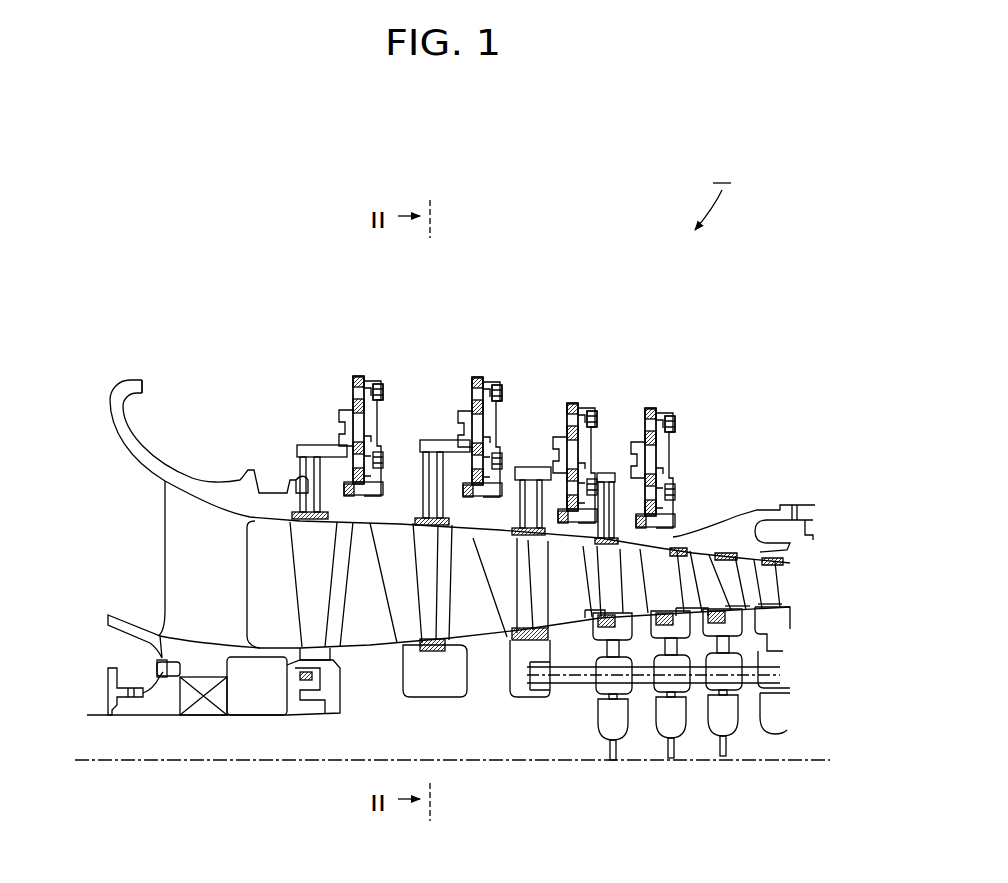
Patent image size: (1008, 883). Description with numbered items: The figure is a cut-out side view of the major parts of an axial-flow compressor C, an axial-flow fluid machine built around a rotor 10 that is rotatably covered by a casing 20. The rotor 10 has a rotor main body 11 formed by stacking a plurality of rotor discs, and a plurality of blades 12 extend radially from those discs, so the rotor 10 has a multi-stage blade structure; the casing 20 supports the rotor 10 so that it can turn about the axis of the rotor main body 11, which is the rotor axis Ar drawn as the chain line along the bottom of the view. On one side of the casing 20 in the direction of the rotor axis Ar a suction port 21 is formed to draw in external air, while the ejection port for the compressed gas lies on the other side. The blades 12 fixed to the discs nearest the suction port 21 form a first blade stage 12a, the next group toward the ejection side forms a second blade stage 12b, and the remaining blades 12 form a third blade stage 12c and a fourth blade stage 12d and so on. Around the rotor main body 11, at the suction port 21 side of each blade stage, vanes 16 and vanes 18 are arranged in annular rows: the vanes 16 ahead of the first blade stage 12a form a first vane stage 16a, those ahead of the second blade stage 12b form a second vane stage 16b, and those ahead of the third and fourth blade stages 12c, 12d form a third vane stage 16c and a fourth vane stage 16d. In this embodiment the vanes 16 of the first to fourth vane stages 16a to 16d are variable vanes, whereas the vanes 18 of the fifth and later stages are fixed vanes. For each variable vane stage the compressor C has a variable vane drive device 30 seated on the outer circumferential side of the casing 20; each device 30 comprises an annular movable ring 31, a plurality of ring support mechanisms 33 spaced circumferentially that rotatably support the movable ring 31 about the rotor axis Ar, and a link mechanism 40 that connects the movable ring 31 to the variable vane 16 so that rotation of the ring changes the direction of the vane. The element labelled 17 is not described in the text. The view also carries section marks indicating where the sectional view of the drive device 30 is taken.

The rotor 10 is at (166, 703).
The rotor main body 11 is at (753, 715).
The blades 12 is at (471, 464).
The first blade stage 12a is at (363, 590).
The second blade stage 12b is at (523, 560).
The third blade stage 12c is at (600, 570).
The fourth blade stage 12d is at (643, 593).
The vanes 16 is at (475, 448).
The first vane stage 16a is at (303, 558).
The second vane stage 16b is at (427, 560).
The third vane stage 16c is at (483, 552).
The fourth vane stage 16d is at (640, 574).
The seal 17 is at (292, 480).
The vanes 18 is at (613, 580).
The casing 20 is at (190, 462).
The suction port 21 is at (108, 413).
The variable vane drive device 30 is at (348, 364).
The movable ring 31 is at (348, 420).
The ring support mechanisms 33 is at (372, 392).
The link mechanism 40 is at (333, 448).
The rotor axis Ar is at (820, 757).
The axial-flow compressor C is at (713, 192).